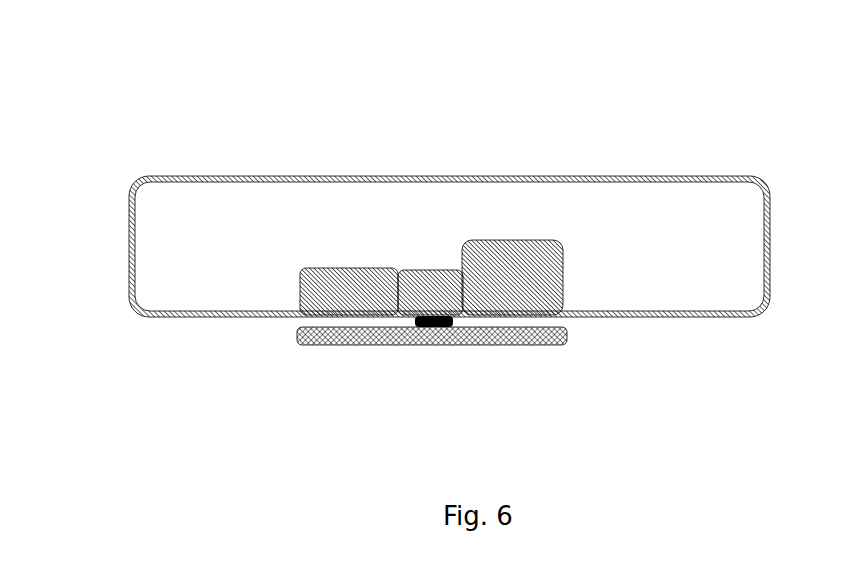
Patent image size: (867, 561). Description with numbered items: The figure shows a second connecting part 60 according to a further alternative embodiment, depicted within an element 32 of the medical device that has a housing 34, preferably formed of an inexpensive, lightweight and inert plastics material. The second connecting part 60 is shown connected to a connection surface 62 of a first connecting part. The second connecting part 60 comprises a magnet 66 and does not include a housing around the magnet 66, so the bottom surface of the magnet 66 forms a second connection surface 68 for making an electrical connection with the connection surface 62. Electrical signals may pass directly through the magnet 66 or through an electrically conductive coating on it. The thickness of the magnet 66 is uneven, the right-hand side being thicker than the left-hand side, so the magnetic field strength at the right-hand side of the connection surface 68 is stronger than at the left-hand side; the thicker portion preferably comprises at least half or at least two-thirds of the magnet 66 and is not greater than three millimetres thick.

The element 32 is at (146, 120).
The housing 34 is at (360, 178).
The second connecting part 60 is at (523, 208).
The connection surface 62 is at (363, 328).
The magnet 66 is at (312, 288).
The second connection surface 68 is at (490, 313).